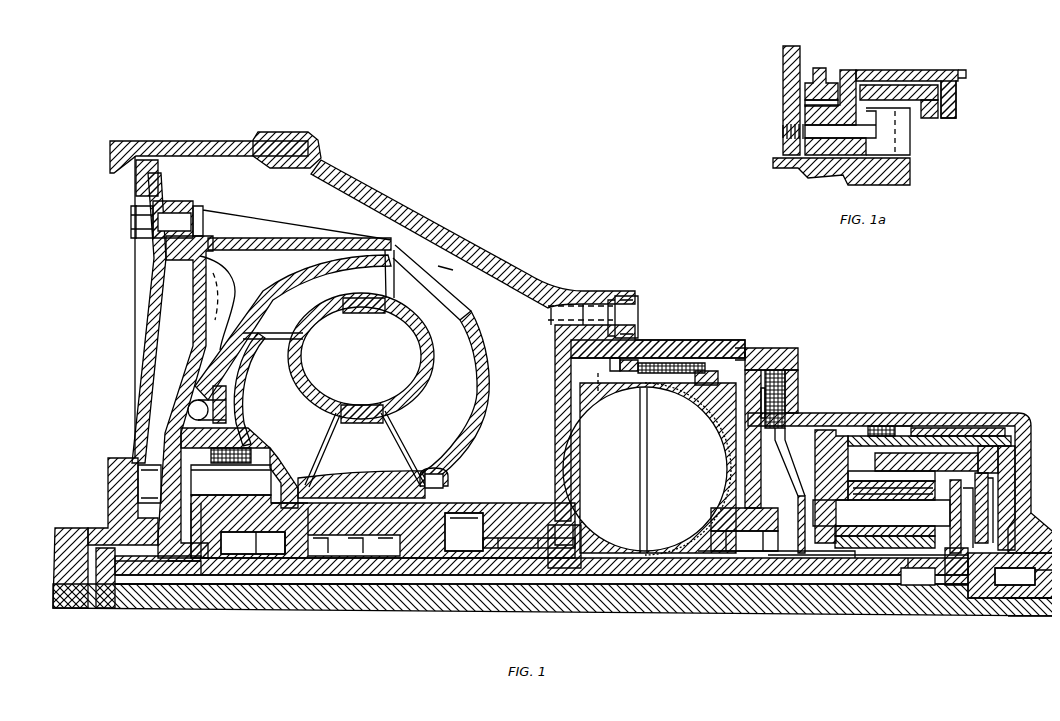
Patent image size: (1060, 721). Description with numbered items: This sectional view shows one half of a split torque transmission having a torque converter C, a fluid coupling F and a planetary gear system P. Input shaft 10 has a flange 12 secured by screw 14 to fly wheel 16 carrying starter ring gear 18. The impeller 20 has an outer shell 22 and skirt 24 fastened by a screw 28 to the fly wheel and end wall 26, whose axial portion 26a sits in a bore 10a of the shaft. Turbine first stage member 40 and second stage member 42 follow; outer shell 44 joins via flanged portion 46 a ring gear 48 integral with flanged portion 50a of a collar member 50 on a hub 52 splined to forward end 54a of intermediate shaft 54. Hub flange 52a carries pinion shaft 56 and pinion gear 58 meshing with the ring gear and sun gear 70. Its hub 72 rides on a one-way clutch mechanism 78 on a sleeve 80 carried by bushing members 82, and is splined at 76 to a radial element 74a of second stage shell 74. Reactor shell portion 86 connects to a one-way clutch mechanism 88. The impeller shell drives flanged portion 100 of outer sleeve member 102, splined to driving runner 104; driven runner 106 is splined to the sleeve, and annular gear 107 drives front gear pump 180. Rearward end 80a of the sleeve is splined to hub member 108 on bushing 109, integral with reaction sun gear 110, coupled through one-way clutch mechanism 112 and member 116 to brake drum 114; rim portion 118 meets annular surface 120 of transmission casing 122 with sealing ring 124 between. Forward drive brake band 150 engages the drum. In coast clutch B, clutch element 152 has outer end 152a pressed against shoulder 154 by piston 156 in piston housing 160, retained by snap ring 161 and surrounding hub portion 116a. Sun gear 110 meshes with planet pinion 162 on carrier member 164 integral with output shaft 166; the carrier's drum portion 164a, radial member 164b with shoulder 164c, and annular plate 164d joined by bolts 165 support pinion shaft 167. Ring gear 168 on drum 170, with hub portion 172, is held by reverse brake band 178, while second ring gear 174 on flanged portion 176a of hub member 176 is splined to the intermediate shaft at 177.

In FIG. 1, the input shaft 10 is at (52, 600).
In FIG. 1, the axial bore 10a is at (92, 520).
In FIG. 1, the flange 12 is at (113, 450).
In FIG. 1, the screw 14 is at (142, 458).
In FIG. 1, the fly wheel 16 is at (155, 192).
In FIG. 1, the starter ring gear 18 is at (151, 170).
In FIG. 1, the impeller 20 is at (480, 340).
In FIG. 1, the outer shell 22 is at (470, 322).
In FIG. 1, the skirt 24 is at (287, 230).
In FIG. 1, the end wall 26 is at (178, 350).
In FIG. 1, the cup shaped axial portion 26a is at (98, 540).
In FIG. 1, the screw 28 is at (261, 220).
In FIG. 1, the first stage turbine member 40 is at (352, 292).
In FIG. 1, the second stage turbine member 42 is at (290, 352).
In FIG. 1, the outer shell 44 is at (270, 268).
In FIG. 1, the flanged portion 46 is at (215, 364).
In FIG. 1, the ring gear 48 is at (230, 428).
In FIG. 1, the collar member 50 is at (135, 570).
In FIG. 1, the flanged portion 50a is at (231, 477).
In FIG. 1, the hub 52 is at (172, 568).
In FIG. 1, the flanged portion 52a is at (253, 543).
In FIG. 1, the intermediate shaft 54 is at (362, 590).
In FIG. 1, the forward end 54a is at (117, 600).
In FIG. 1, the pinion shaft 56 is at (231, 480).
In FIG. 1, the pinion gear 58 is at (246, 446).
In FIG. 1, the sun gear 70 is at (267, 543).
In FIG. 1, the hub 72 is at (297, 553).
In FIG. 1, the outer shell 74 is at (236, 386).
In FIG. 1, the radially extending element 74a is at (283, 466).
In FIG. 1, the spline 76 is at (303, 485).
In FIG. 1, the one-way clutch mechanism 78 is at (248, 550).
In FIG. 1, the sleeve 80 is at (215, 577).
In FIG. 1, the rearward end 80a is at (722, 577).
In FIG. 1, the bushing members 82 is at (272, 560).
In FIG. 1, the outer shell portion 86 is at (346, 480).
In FIG. 1, the one-way clutch mechanism 88 is at (325, 548).
In FIG. 1, the flanged portion 100 is at (441, 474).
In FIG. 1, the outer sleeve member 102 is at (455, 548).
In FIG. 1, the driving runner 104 is at (616, 470).
In FIG. 1, the driven runner 106 is at (666, 470).
In FIG. 1, the annular gear 107 is at (598, 375).
In FIG. 1, the hub member 108 is at (782, 565).
In FIG. 1, the bushing 109 is at (830, 570).
In FIG. 1, the reaction sun gear 110 is at (922, 580).
In FIG. 1a, the reaction sun gear 110 is at (902, 152).
In FIG. 1, the one-way clutch mechanism 112 is at (744, 529).
In FIG. 1, the brake drum 114 is at (700, 372).
In FIG. 1, the member 116 is at (703, 407).
In FIG. 1, the hub portion 116a is at (753, 520).
In FIG. 1, the annular rim portion 118 is at (617, 350).
In FIG. 1, the annular surface 120 is at (686, 352).
In FIG. 1, the transmission casing 122 is at (482, 256).
In FIG. 1, the sealing ring 124 is at (624, 312).
In FIG. 1, the forward drive brake band 150 is at (690, 352).
In FIG. 1, the clutch element 152 is at (770, 448).
In FIG. 1, the outer end 152a is at (779, 382).
In FIG. 1, the shoulder 154 is at (779, 397).
In FIG. 1, the piston 156 is at (790, 360).
In FIG. 1, the piston housing 160 is at (765, 340).
In FIG. 1, the snap ring 161 is at (742, 340).
In FIG. 1, the planet pinion 162 is at (858, 482).
In FIG. 1, the carrier member 164 is at (975, 445).
In FIG. 1a, the carrier member 164 is at (950, 86).
In FIG. 1, the annular drum portion 164a is at (875, 494).
In FIG. 1a, the annular drum portion 164a is at (870, 55).
In FIG. 1a, the radial member 164b is at (795, 102).
In FIG. 1, the shoulder 164c is at (935, 590).
In FIG. 1a, the shoulder 164c is at (898, 130).
In FIG. 1a, the annular plate 164d is at (775, 72).
In FIG. 1a, the bolts 165 is at (805, 121).
In FIG. 1, the output shaft 166 is at (1035, 595).
In FIG. 1, the pinion shaft 167 is at (895, 498).
In FIG. 1, the ring gear 168 is at (815, 458).
In FIG. 1a, the ring gear 168 is at (822, 72).
In FIG. 1, the drum 170 is at (857, 430).
In FIG. 1, the hub portion 172 is at (1030, 607).
In FIG. 1, the ring gear 174 is at (921, 486).
In FIG. 1a, the ring gear 174 is at (887, 84).
In FIG. 1, the hub member 176 is at (880, 570).
In FIG. 1, the radially flanged portion 176a is at (1015, 576).
In FIG. 1a, the radially flanged portion 176a is at (930, 108).
In FIG. 1, the spline 177 is at (958, 590).
In FIG. 1, the reverse brake band 178 is at (927, 428).
In FIG. 1, the front gear pump 180 is at (560, 541).
In FIG. 1, the torque converter C is at (432, 255).
In FIG. 1, the fluid coupling F is at (552, 432).
In FIG. 1, the coast clutch B is at (780, 372).
In FIG. 1, the planetary gear system P is at (897, 416).